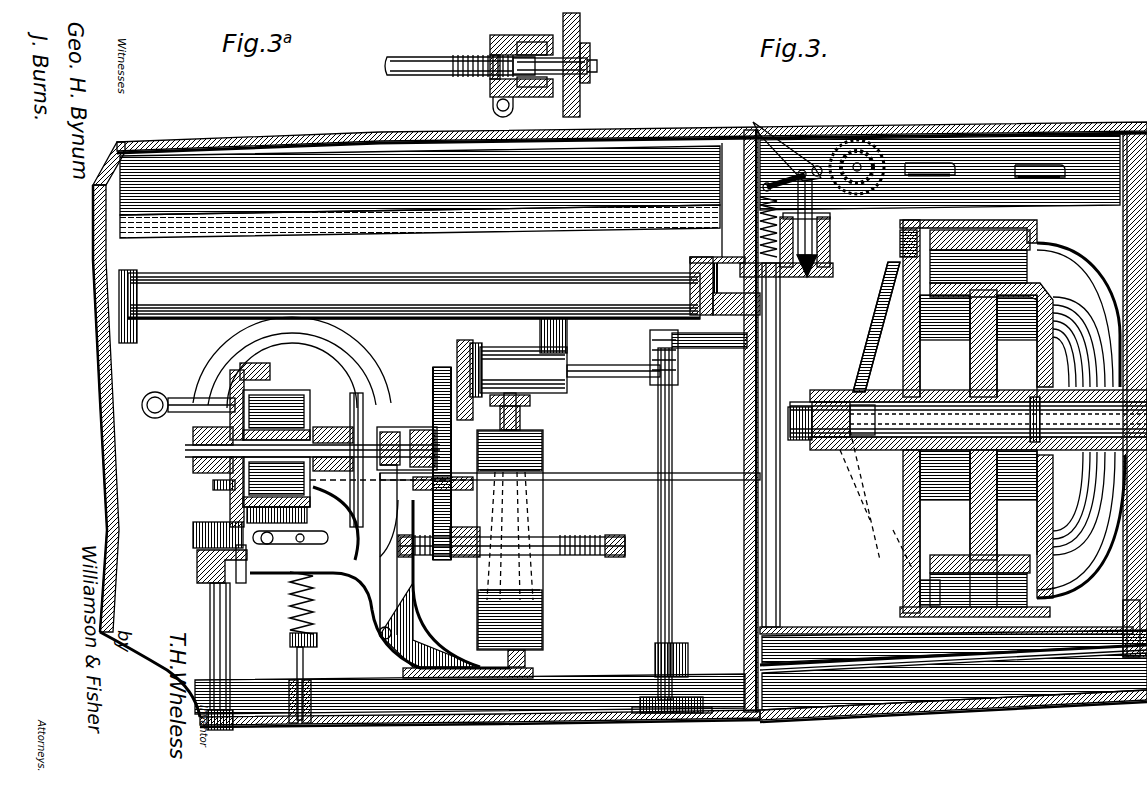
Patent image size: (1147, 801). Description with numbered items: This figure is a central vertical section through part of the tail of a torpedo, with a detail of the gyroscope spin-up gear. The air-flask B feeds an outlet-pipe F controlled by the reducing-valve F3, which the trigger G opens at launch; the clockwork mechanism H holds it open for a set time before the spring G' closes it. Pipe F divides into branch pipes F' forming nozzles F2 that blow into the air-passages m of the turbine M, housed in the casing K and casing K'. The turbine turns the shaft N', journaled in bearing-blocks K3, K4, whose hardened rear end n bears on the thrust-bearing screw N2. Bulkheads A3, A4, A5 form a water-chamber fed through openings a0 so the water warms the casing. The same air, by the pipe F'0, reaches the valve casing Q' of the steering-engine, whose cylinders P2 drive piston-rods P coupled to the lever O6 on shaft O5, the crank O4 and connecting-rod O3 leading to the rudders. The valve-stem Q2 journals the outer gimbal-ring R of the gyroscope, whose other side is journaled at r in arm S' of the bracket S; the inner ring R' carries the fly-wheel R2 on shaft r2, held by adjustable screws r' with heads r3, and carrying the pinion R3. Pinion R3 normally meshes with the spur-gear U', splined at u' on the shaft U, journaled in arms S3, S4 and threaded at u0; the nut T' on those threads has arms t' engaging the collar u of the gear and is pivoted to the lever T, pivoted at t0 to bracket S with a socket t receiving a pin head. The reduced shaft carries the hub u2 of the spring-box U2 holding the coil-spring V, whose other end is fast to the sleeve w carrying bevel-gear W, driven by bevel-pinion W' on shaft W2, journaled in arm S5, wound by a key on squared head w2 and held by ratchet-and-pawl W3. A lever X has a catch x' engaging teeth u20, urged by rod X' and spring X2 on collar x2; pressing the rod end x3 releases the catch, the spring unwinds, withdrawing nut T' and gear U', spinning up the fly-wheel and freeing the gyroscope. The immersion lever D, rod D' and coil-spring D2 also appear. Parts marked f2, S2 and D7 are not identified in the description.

In FIG. 3A, the shaft U is at (486, 52).
In FIG. 3, the shaft U is at (369, 377).
In FIG. 3A, the nut T' is at (511, 55).
In FIG. 3, the nut T' is at (373, 453).
In FIG. 3A, the collar u is at (532, 47).
In FIG. 3, the collar u is at (407, 438).
In FIG. 3A, the spline u' is at (604, 51).
In FIG. 3A, the spur-gear U' is at (588, 65).
In FIG. 3, the spur-gear U' is at (322, 393).
In FIG. 3A, the screw-threads u0 is at (468, 77).
In FIG. 3, the screw-threads u0 is at (380, 430).
In FIG. 3A, the arms t' is at (516, 105).
In FIG. 3, the arms t' is at (402, 419).
In FIG. 3, the bulkhead A4 is at (1125, 150).
In FIG. 3, the bulkhead A3 is at (770, 565).
In FIG. 3, the bulkhead A5 is at (946, 615).
In FIG. 3, the air-flask B is at (108, 340).
In FIG. 3, the trigger G is at (787, 177).
In FIG. 3, the spring G' is at (709, 203).
In FIG. 3, the clockwork mechanism H is at (840, 140).
In FIG. 3, the openings a0 is at (930, 163).
In FIG. 3, the casing K is at (970, 218).
In FIG. 3, the casing K' is at (1078, 305).
In FIG. 3, the bearing-block K3 is at (1081, 525).
In FIG. 3, the bearing-block K4 is at (905, 472).
In FIG. 3, the turbine M is at (968, 462).
In FIG. 3, the air-passages m is at (986, 418).
In FIG. 3, the shaft N' is at (968, 397).
In FIG. 3, the thrust-bearing screw N2 is at (812, 447).
In FIG. 3, the rear end n is at (838, 395).
In FIG. 3, the outlet-pipe F is at (444, 280).
In FIG. 3, the branch pipes F' is at (809, 445).
In FIG. 3, the nozzles F2 is at (882, 298).
In FIG. 3, the reducing-valve F3 is at (832, 240).
In FIG. 3, the pipe port f2 is at (900, 262).
In FIG. 3, the pipe F'0 is at (568, 333).
In FIG. 3, the piston-rods P is at (590, 368).
In FIG. 3, the cylinders P2 is at (493, 357).
In FIG. 3, the connecting-rod O3 is at (850, 665).
In FIG. 3, the crank O4 is at (673, 675).
In FIG. 3, the shaft O5 is at (674, 565).
In FIG. 3, the lever O6 is at (674, 374).
In FIG. 3, the valve casing Q' is at (539, 401).
In FIG. 3, the valve-stem Q2 is at (520, 416).
In FIG. 3, the outer gimbal-ring R is at (524, 540).
In FIG. 3, the inner ring R' is at (538, 536).
In FIG. 3, the fly-wheel R2 is at (527, 518).
In FIG. 3, the pinion R3 is at (458, 557).
In FIG. 3, the journal r is at (488, 644).
In FIG. 3, the adjustable screw r' is at (521, 562).
In FIG. 3, the shaft r2 is at (562, 557).
In FIG. 3, the head r3 is at (398, 560).
In FIG. 3, the bracket S is at (410, 593).
In FIG. 3, the arm S' is at (468, 713).
In FIG. 3, the rack S2 is at (445, 365).
In FIG. 3, the arm S3 is at (412, 365).
In FIG. 3, the arm S4 is at (193, 436).
In FIG. 3, the arm S5 is at (292, 545).
In FIG. 3, the lever T is at (380, 620).
In FIG. 3, the socket t is at (368, 536).
In FIG. 3, the pivot t0 is at (391, 632).
In FIG. 3, the lever D is at (198, 389).
In FIG. 3, the rod D' is at (145, 375).
In FIG. 3, the coil-spring D2 is at (140, 400).
In FIG. 3, the horizontal rod D7 is at (609, 476).
In FIG. 3, the coil-spring V is at (237, 363).
In FIG. 3, the box U2 is at (303, 370).
In FIG. 3, the hub u2 is at (233, 478).
In FIG. 3, the teeth u20 is at (247, 372).
In FIG. 3, the bevel-gear W is at (199, 501).
In FIG. 3, the bevel-pinion W' is at (199, 533).
In FIG. 3, the shaft W2 is at (197, 646).
In FIG. 3, the ratchet-and-pawl arrangement W3 is at (197, 556).
In FIG. 3, the sleeve w is at (245, 507).
In FIG. 3, the squared head w2 is at (227, 732).
In FIG. 3, the lever X is at (335, 523).
In FIG. 3, the rod X' is at (281, 603).
In FIG. 3, the spring X2 is at (290, 641).
In FIG. 3, the catch x' is at (244, 573).
In FIG. 3, the collar x2 is at (312, 643).
In FIG. 3, the rod end x3 is at (307, 726).